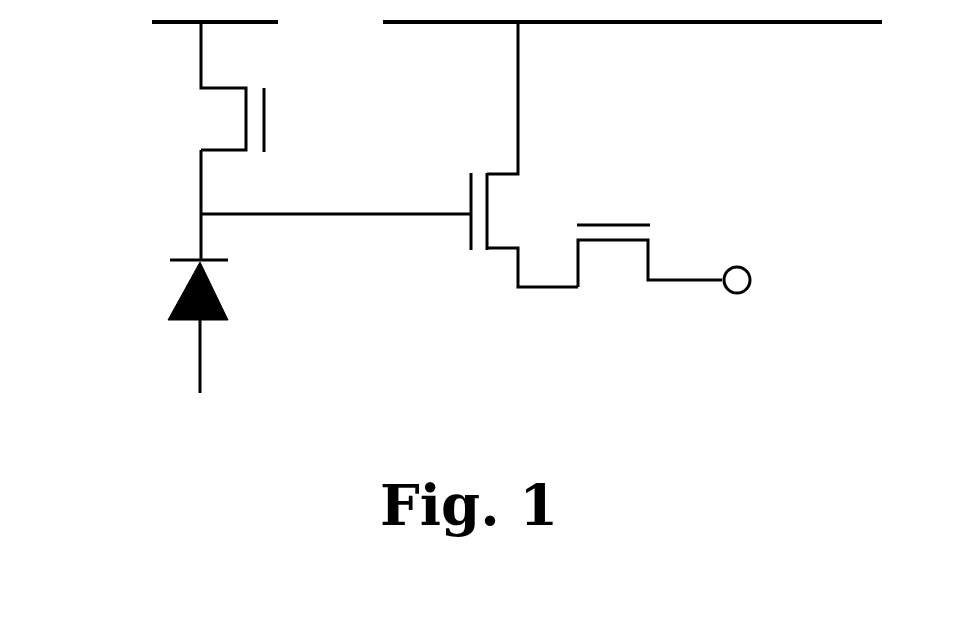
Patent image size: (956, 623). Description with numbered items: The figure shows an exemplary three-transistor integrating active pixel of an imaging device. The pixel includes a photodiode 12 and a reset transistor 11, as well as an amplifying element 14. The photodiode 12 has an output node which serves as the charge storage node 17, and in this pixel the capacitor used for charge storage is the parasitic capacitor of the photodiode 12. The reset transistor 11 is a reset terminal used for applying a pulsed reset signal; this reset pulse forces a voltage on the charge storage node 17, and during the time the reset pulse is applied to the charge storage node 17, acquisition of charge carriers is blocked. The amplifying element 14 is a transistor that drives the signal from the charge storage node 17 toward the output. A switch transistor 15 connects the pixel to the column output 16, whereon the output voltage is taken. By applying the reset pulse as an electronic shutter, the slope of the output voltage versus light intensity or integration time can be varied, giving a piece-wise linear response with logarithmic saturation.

The reset transistor 11 is at (277, 87).
The photodiode 12 is at (149, 326).
The amplifying element 14 is at (483, 154).
The switch transistor 15 is at (649, 227).
The column output 16 is at (750, 305).
The charge storage node 17 is at (282, 205).